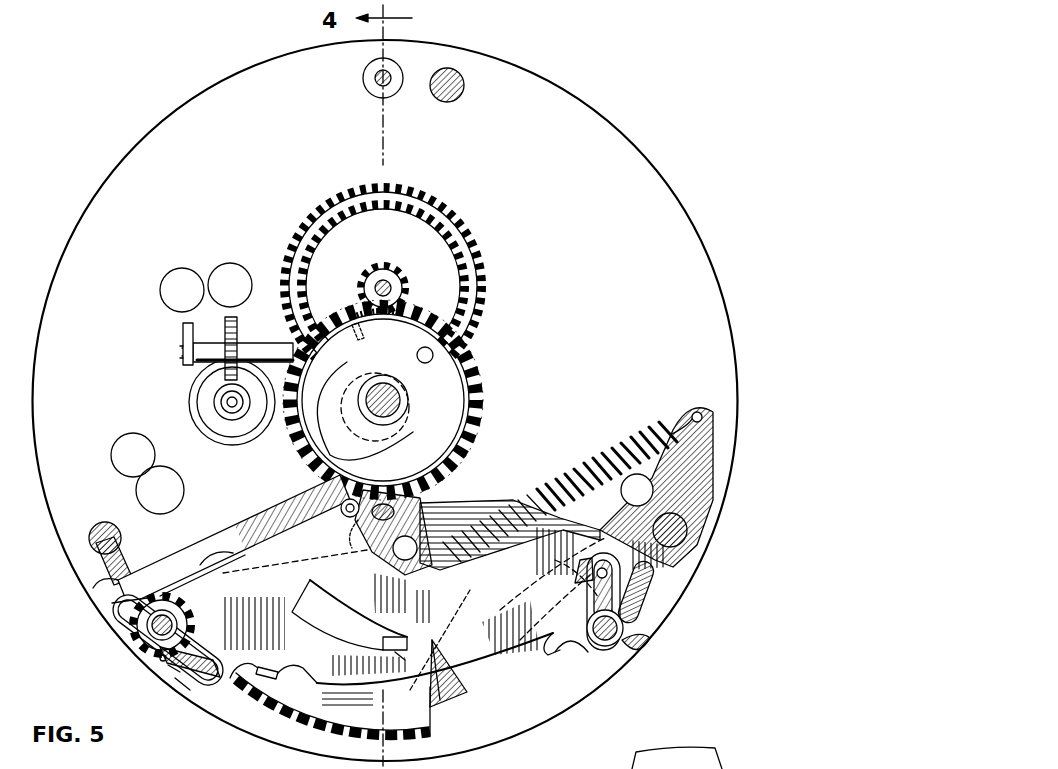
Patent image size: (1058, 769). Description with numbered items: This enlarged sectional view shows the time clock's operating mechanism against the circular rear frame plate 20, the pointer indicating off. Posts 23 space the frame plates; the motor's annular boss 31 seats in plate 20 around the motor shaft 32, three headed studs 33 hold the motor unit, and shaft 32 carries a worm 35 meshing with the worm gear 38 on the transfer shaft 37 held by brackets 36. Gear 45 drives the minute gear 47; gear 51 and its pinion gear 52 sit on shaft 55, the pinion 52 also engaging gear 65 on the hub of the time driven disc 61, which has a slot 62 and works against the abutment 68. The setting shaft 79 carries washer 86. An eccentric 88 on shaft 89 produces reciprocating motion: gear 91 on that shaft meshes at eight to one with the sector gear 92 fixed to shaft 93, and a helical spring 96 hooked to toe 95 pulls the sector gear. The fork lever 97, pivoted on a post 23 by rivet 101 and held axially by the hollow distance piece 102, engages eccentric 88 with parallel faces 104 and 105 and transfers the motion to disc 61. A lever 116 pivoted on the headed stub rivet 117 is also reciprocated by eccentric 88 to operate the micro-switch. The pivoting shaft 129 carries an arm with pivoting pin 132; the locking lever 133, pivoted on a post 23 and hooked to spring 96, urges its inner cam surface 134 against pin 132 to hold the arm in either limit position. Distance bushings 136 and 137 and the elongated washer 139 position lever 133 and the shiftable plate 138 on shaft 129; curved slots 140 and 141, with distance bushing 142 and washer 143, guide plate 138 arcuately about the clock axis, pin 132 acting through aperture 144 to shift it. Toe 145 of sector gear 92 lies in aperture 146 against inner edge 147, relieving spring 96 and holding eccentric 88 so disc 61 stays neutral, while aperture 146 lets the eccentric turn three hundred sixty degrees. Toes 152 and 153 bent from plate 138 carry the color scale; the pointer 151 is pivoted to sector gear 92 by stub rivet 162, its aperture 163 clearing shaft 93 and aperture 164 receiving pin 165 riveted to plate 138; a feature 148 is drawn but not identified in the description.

The rear frame plate 20 is at (672, 226).
The posts or studs 23 is at (463, 92).
The shaft 79 is at (377, 88).
The washer 86 is at (390, 92).
The annular boss 31 is at (193, 392).
The motor shaft 32 is at (227, 403).
The worm 35 is at (228, 417).
The headed studs 33 is at (229, 278).
The brackets 36 is at (186, 340).
The transfer shaft 37 is at (280, 346).
The worm gear 38 is at (238, 320).
The gear 45 is at (477, 296).
The gear 51 is at (452, 270).
The pinion gear 52 is at (398, 293).
The shaft 55 is at (391, 284).
The time driven disc 61 is at (448, 440).
The slot 62 is at (420, 350).
The gear 65 is at (481, 386).
The minute gear 47 is at (480, 421).
The abutment 68 is at (356, 318).
The eccentric 88 is at (200, 650).
The shaft 89 is at (152, 650).
The gear 91 is at (135, 640).
The sector gear 92 is at (421, 722).
The shaft 93 is at (390, 512).
The toe 95 is at (441, 565).
The helical spring 96 is at (592, 458).
The fork lever 97 is at (222, 523).
The rivet or screw 101 is at (110, 613).
The hollow distance piece 102 is at (127, 560).
The parallel face 104 is at (133, 623).
The parallel face 105 is at (177, 586).
The lever 116 is at (178, 690).
The headed stub rivet 117 is at (645, 488).
The pivoting shaft 129 is at (604, 646).
The pivoting pin 132 is at (606, 566).
The locking lever 133 is at (692, 412).
The inner cam surface 134 is at (570, 618).
The distance bushing 136 is at (636, 652).
The distance bushing 137 is at (580, 645).
The shiftable plate 138 is at (412, 690).
The elongated washer 139 is at (622, 622).
The slot 140 is at (640, 598).
The slot 141 is at (225, 686).
The distance bushing 142 is at (160, 662).
The washer 143 is at (175, 680).
The aperture 144 is at (575, 568).
The toe 145 is at (382, 644).
The aperture 146 is at (349, 615).
The inner surface 147 is at (405, 652).
The surface 148 is at (553, 573).
The pointer 151 is at (462, 690).
The toe 152 is at (286, 675).
The toe 153 is at (540, 650).
The stub rivet 162 is at (402, 547).
The aperture 163 is at (425, 506).
The aperture 164 is at (356, 532).
The pin 165 is at (346, 514).